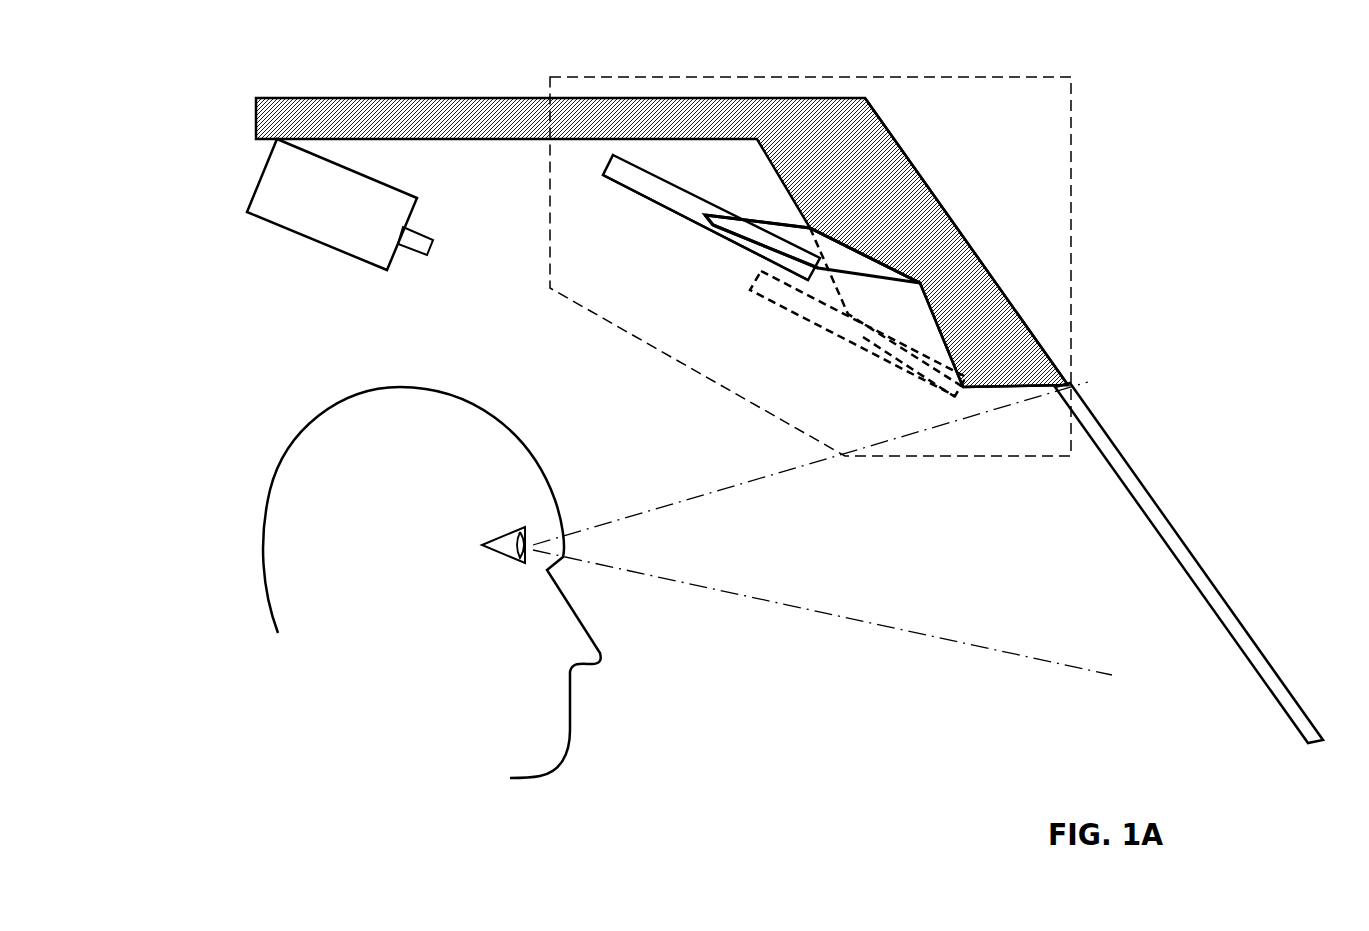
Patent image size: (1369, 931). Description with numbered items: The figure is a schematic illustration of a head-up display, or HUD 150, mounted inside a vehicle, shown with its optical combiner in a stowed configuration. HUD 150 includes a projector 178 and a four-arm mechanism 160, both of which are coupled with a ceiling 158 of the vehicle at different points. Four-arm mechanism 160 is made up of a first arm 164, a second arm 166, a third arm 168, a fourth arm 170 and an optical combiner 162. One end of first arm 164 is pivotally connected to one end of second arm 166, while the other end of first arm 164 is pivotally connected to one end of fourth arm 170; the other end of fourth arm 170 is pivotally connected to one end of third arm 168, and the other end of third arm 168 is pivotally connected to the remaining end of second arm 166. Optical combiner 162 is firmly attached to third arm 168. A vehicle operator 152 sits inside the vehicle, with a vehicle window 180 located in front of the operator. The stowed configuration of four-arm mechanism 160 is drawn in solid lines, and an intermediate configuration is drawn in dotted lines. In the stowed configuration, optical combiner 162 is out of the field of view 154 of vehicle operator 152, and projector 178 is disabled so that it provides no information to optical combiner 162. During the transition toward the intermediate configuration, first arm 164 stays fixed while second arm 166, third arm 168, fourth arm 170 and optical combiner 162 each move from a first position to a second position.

The HUD 150 is at (533, 45).
The vehicle operator 152 is at (297, 457).
The field of view 154 is at (663, 500).
The ceiling 158 is at (624, 241).
The four-arm mechanism 160 is at (1071, 102).
The optical combiner 162 is at (603, 177).
The first arm 164 is at (850, 225).
The second arm 166 is at (774, 222).
The third arm 168 is at (750, 244).
The fourth arm 170 is at (967, 235).
The projector 178 is at (288, 232).
The vehicle window 180 is at (1277, 670).